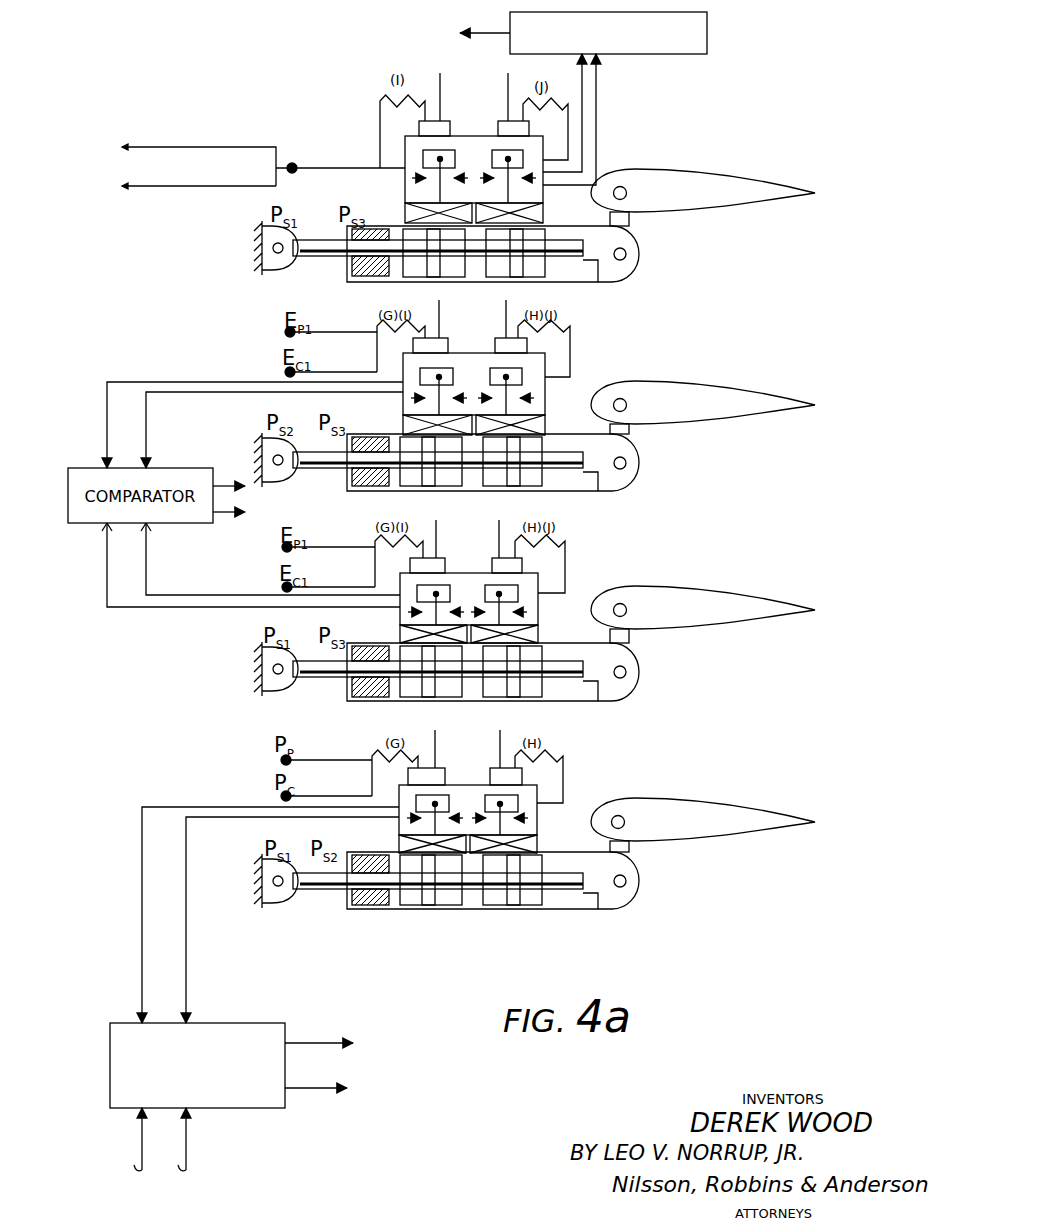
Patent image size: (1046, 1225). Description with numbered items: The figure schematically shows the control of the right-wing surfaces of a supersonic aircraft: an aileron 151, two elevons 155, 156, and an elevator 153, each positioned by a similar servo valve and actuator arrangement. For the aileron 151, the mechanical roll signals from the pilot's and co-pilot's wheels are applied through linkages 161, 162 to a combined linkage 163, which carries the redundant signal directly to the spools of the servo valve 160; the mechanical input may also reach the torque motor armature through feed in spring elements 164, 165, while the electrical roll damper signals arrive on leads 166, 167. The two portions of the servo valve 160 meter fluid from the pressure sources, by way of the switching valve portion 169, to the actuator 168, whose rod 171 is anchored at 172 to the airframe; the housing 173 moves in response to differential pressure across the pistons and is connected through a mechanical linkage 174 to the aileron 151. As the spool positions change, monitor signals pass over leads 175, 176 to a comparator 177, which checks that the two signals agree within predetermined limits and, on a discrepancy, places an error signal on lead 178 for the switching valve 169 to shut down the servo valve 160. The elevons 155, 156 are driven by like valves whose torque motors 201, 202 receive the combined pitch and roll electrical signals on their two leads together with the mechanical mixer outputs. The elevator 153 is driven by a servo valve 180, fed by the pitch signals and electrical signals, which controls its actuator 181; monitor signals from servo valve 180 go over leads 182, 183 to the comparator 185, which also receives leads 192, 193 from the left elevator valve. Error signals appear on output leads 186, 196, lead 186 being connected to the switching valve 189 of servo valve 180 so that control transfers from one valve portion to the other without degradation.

The servo valve 160 is at (433, 56).
The linkage 161 is at (154, 147).
The linkage 162 is at (150, 188).
The combined linkage 163 is at (294, 163).
The feed in spring element 164 is at (385, 100).
The feed in spring element 165 is at (542, 127).
The lead 166 is at (441, 112).
The lead 167 is at (506, 86).
The actuator 168 is at (440, 283).
The switching valve portion 169 is at (400, 208).
The rod 171 is at (301, 262).
The anchor 172 is at (256, 277).
The housing 173 is at (608, 283).
The mechanical linkage 174 is at (634, 234).
The aileron 151 is at (732, 212).
The lead 175 is at (582, 126).
The lead 176 is at (596, 156).
The comparator 177 is at (692, 54).
The lead 178 is at (506, 33).
The torque motor 201 is at (468, 334).
The elevon 155 is at (710, 425).
The torque motor 202 is at (470, 546).
The elevon 156 is at (712, 632).
The servo valve 180 is at (579, 770).
The switching valve 189 is at (398, 849).
The actuator 181 is at (470, 909).
The elevator 153 is at (735, 842).
The lead 182 is at (141, 888).
The lead 183 is at (187, 968).
The comparator 185 is at (228, 1023).
The output lead 186 is at (305, 1043).
The output lead 196 is at (330, 1089).
The lead 192 is at (140, 1160).
The lead 193 is at (188, 1150).